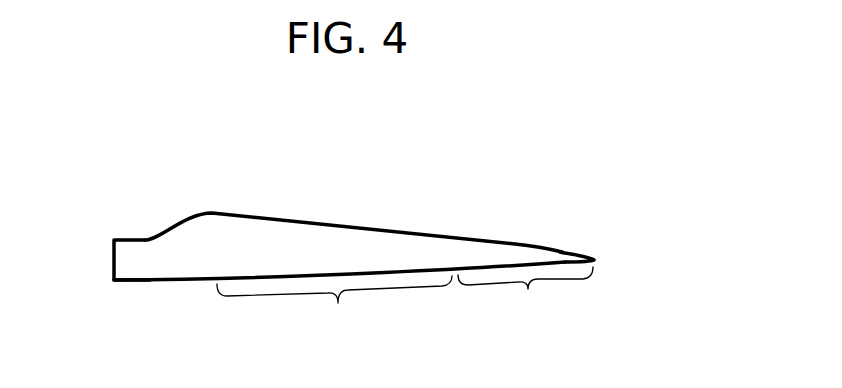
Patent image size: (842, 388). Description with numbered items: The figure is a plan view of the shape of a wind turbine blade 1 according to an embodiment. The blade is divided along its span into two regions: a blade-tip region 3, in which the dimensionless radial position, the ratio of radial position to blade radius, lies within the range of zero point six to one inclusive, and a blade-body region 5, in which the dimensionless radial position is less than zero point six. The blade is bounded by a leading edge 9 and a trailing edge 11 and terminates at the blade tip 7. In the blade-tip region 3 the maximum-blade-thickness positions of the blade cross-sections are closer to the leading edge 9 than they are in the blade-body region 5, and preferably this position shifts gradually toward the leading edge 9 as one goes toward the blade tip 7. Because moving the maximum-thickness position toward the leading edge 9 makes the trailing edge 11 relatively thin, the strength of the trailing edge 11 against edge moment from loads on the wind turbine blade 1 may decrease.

The wind turbine blade 1 is at (107, 157).
The blade-tip region 3 is at (525, 298).
The blade-body region 5 is at (334, 306).
The blade tip 7 is at (597, 259).
The leading edge 9 is at (417, 276).
The trailing edge 11 is at (405, 230).